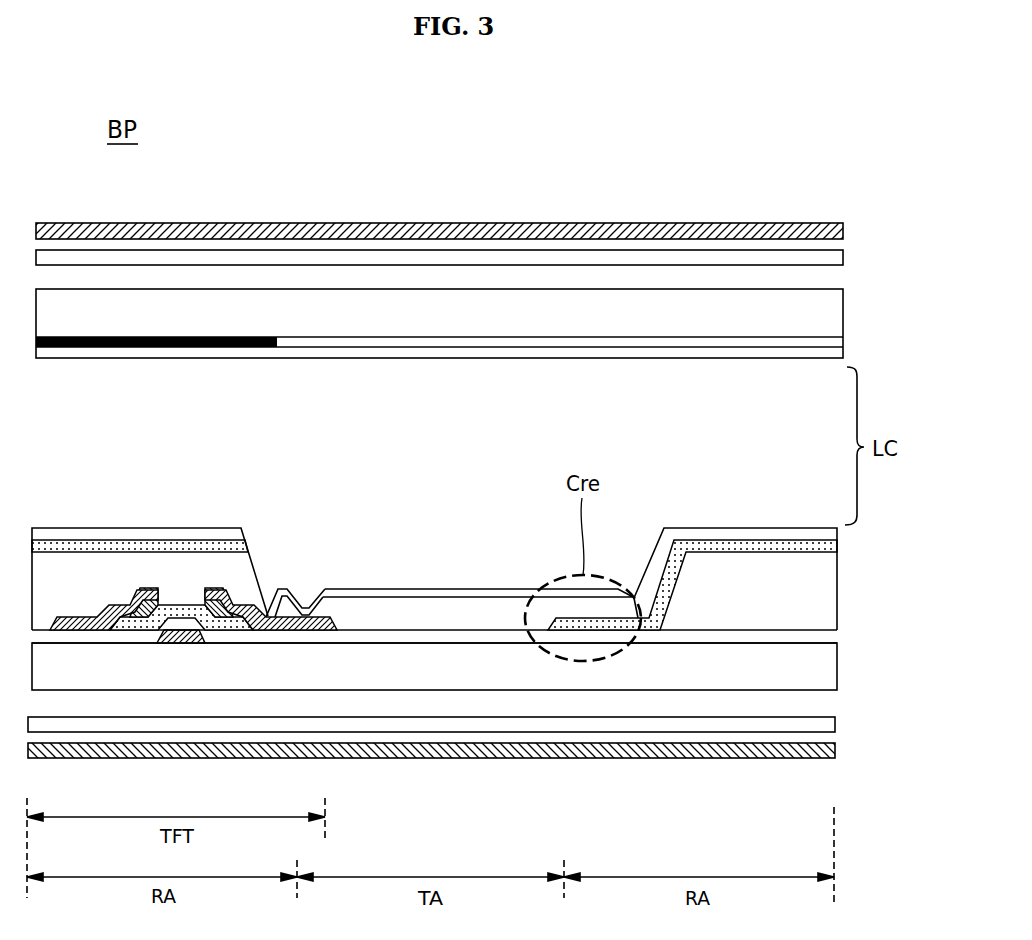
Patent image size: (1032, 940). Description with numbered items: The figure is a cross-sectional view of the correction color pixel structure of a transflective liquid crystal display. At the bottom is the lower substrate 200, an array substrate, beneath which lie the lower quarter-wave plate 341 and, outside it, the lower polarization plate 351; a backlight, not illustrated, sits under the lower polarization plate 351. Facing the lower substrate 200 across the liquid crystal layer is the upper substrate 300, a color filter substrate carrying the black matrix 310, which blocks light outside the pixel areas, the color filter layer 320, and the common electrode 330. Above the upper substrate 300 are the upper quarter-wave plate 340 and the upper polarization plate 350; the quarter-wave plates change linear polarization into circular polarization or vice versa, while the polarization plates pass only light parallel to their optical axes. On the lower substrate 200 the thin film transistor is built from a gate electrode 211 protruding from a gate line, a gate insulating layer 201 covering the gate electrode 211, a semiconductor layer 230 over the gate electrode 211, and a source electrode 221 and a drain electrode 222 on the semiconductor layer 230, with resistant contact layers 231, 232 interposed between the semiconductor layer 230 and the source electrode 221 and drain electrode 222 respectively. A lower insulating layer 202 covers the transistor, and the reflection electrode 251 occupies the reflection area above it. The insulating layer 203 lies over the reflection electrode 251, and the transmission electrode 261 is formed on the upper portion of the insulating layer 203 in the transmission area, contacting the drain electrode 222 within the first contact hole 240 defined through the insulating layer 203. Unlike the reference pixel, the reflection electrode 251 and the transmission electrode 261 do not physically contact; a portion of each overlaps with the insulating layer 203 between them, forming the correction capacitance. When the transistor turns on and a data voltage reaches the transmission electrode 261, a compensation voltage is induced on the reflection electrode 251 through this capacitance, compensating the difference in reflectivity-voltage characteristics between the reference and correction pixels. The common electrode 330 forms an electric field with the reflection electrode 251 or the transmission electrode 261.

The lower substrate 200 is at (837, 668).
The gate insulating layer 201 is at (837, 633).
The lower insulating layer 202 is at (837, 595).
The insulating layer 203 is at (500, 610).
The gate electrode 211 is at (183, 630).
The source electrode 221 is at (92, 617).
The drain electrode 222 is at (270, 620).
The semiconductor layer 230 is at (170, 610).
The resistant contact layer 231 is at (136, 606).
The resistant contact layer 232 is at (265, 614).
The first contact hole 240 is at (308, 594).
The reflection electrode 251 is at (45, 540).
The transmission electrode 261 is at (442, 590).
The upper substrate 300 is at (843, 315).
The black matrix 310 is at (96, 347).
The color filter layer 320 is at (843, 343).
The common electrode 330 is at (843, 356).
The upper quarter-wave plate 340 is at (843, 258).
The lower quarter-wave plate 341 is at (835, 722).
The upper polarization plate 350 is at (843, 233).
The lower polarization plate 351 is at (835, 750).